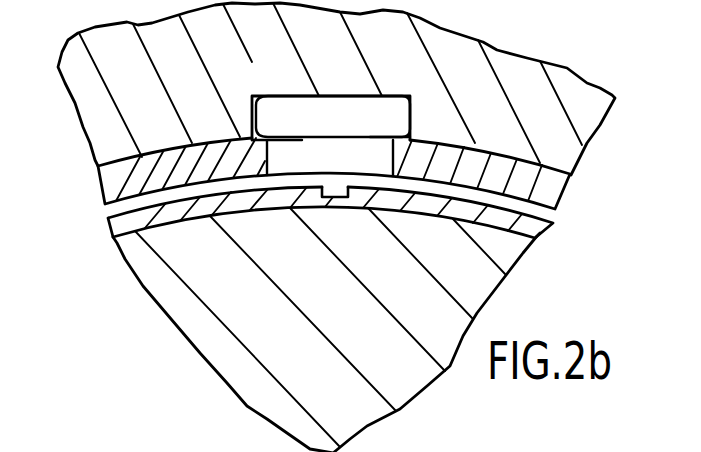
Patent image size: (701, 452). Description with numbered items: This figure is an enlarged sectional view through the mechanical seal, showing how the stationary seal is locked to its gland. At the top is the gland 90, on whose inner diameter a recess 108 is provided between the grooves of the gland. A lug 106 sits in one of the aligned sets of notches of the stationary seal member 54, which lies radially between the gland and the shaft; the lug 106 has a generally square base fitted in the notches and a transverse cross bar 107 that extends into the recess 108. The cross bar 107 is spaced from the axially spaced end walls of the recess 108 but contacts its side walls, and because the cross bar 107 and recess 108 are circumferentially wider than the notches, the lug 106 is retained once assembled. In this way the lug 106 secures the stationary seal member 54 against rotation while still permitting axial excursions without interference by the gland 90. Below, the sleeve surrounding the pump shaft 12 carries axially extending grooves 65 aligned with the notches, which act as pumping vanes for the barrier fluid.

The gland 90 is at (415, 53).
The cross bar 107 is at (251, 92).
The recess 108 is at (317, 93).
The lug 106 is at (297, 165).
The stationary seal member 54 is at (207, 168).
The grooves 65 is at (344, 198).
The pump shaft 12 is at (364, 332).